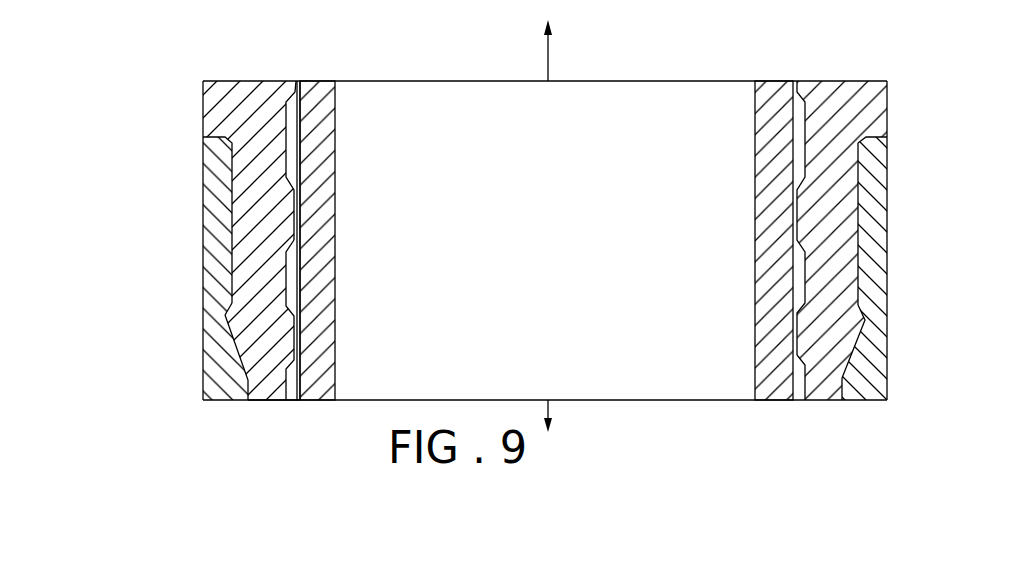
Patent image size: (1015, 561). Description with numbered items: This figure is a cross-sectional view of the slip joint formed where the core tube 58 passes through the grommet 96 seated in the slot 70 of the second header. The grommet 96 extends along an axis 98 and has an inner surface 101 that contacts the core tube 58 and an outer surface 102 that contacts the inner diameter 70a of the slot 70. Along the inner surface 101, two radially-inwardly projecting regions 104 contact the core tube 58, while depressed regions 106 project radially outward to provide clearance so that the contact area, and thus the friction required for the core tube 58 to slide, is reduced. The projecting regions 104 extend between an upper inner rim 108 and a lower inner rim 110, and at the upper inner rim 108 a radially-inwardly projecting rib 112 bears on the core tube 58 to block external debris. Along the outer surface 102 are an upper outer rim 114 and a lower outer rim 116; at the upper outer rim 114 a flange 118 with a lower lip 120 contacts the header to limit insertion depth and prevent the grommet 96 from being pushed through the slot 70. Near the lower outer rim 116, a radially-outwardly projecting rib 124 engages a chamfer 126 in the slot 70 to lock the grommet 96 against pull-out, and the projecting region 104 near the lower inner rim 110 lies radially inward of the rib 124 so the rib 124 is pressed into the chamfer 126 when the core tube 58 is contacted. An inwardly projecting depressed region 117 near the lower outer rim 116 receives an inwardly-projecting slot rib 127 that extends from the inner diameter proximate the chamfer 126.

The core tube 58 is at (322, 128).
The slot 70 is at (860, 238).
The inner diameter of the slot 70a is at (232, 209).
The grommet 96 is at (847, 110).
The axis 98 is at (548, 62).
The inner surface 101 is at (303, 120).
The outer surface 102 is at (217, 175).
The radially-inwardly projecting region 104 is at (797, 345).
The depressed region 106 is at (288, 376).
The upper inner rim 108 is at (297, 82).
The lower inner rim 110 is at (797, 400).
The radially-inwardly projecting rib 112 is at (797, 88).
The upper outer rim 114 is at (888, 80).
The lower outer rim 116 is at (842, 390).
The inwardly projecting depressed region 117 is at (261, 394).
The flange 118 is at (888, 108).
The lower lip 120 is at (887, 156).
The radially-outwardly projecting rib 124 is at (855, 328).
The chamfer 126 is at (233, 351).
The inwardly-projecting slot rib 127 is at (244, 393).